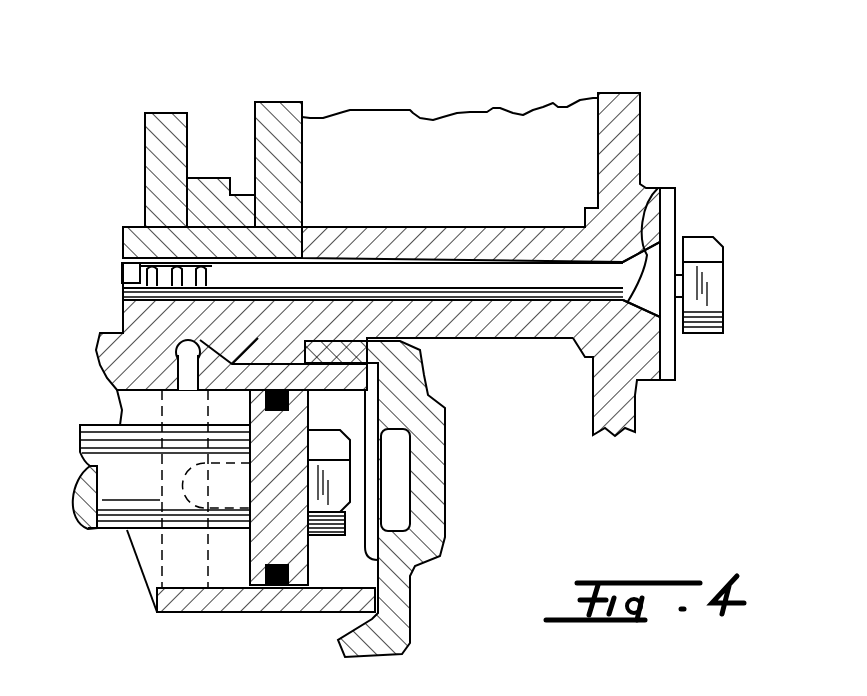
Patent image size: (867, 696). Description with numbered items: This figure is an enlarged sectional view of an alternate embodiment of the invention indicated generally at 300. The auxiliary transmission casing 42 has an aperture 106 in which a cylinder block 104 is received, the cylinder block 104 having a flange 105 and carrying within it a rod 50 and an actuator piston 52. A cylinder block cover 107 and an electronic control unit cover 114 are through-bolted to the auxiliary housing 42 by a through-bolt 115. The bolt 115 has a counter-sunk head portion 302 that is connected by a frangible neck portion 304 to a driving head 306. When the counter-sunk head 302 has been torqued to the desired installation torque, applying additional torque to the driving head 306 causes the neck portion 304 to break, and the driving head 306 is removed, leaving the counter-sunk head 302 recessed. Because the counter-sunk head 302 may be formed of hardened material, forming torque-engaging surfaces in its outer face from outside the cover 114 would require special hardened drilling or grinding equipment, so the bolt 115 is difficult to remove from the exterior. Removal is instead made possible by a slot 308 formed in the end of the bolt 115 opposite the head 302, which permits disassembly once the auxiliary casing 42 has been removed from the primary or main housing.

The alternate embodiment 300 is at (381, 76).
The auxiliary transmission casing 42 is at (145, 158).
The flange 105 is at (162, 113).
The cylinder block cover 107 is at (272, 100).
The electronic control unit cover 114 is at (628, 95).
The cylinder block 104 is at (112, 330).
The counter-sunk head portion 302 is at (665, 195).
The through-bolt 115 is at (500, 303).
The slot 308 is at (125, 282).
The frangible neck portion 304 is at (668, 284).
The driving head 306 is at (723, 270).
The aperture 106 is at (132, 358).
The actuator piston 52 is at (245, 560).
The rod 50 is at (108, 530).